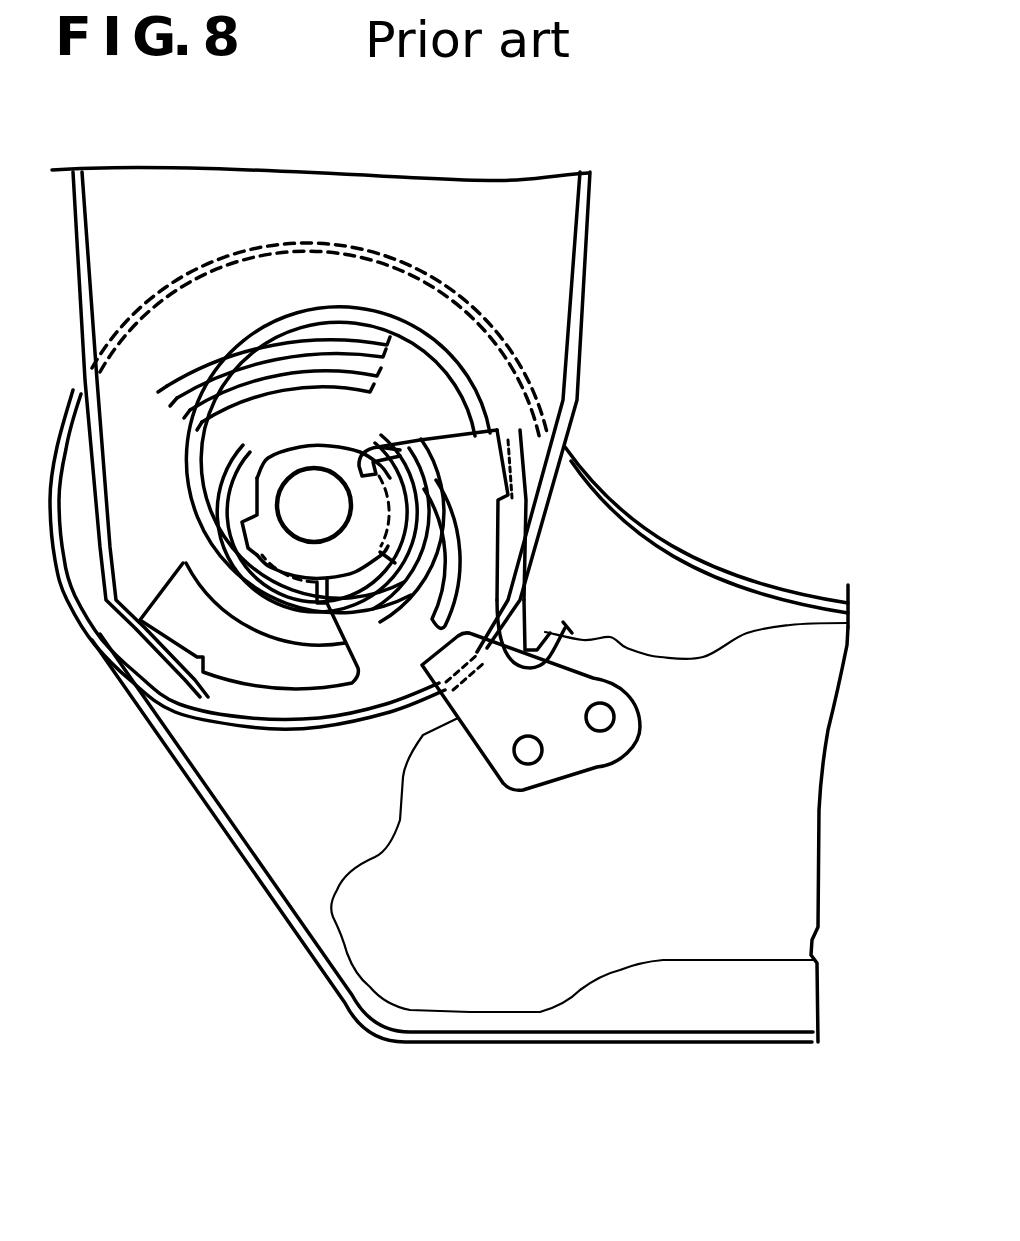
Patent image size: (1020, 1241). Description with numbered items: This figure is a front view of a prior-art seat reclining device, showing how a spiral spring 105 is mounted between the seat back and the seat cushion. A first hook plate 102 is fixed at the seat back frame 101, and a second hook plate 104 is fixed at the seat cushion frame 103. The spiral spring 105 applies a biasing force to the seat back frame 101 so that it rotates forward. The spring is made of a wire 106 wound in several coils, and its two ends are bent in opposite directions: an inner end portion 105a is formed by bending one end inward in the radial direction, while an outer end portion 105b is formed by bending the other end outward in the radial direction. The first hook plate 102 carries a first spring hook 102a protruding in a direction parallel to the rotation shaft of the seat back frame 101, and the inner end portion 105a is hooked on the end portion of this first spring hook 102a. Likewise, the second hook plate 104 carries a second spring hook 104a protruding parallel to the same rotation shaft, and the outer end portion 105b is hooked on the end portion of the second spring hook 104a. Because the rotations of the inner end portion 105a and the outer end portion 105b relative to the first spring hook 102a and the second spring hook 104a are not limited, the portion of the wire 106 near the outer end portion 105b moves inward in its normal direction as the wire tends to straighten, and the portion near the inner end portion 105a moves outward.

The seat back frame 101 is at (572, 258).
The first hook plate 102 is at (268, 470).
The first spring hook 102a is at (395, 470).
The seat cushion frame 103 is at (223, 787).
The second hook plate 104 is at (480, 737).
The second spring hook 104a is at (543, 630).
The spiral spring 105 is at (355, 302).
The inner end portion 105a is at (375, 445).
The outer end portion 105b is at (627, 650).
The wire 106 is at (205, 388).